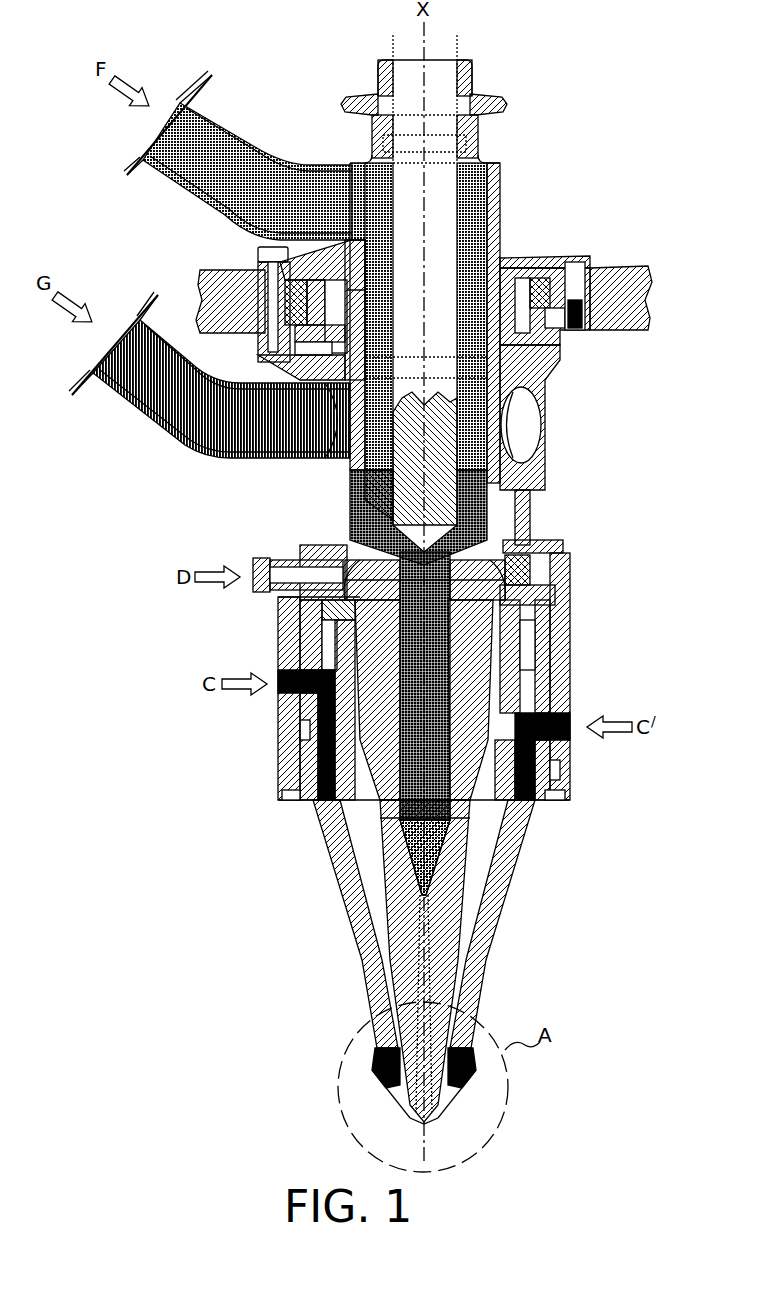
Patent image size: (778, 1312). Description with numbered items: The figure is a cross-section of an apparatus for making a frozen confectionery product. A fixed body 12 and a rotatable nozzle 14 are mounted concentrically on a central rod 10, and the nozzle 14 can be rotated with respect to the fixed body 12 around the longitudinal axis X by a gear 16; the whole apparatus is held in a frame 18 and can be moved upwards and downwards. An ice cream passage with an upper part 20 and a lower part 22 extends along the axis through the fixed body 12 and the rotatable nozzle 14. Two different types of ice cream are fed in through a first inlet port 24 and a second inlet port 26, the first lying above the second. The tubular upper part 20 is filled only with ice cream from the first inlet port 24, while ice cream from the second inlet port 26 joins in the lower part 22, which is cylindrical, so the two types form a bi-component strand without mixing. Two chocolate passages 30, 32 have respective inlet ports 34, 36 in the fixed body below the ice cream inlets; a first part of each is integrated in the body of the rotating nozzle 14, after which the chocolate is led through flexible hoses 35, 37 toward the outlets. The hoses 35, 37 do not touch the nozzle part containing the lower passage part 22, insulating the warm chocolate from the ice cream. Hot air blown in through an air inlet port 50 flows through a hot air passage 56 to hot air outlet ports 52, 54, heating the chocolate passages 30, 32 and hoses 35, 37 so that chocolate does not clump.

The central rod 10 is at (455, 38).
The fixed body 12 is at (533, 258).
The rotatable nozzle 14 is at (528, 528).
The gear 16 is at (580, 262).
The frame 18 is at (632, 330).
The upper part of ice cream passage 20 is at (382, 262).
The lower part of ice cream passage 22 is at (405, 798).
The first inlet port 24 is at (183, 110).
The second inlet port 26 is at (133, 333).
The chocolate passage 30 is at (280, 778).
The chocolate passage 32 is at (565, 755).
The chocolate inlet port 34 is at (572, 718).
The flexible hose 35 is at (350, 898).
The chocolate inlet port 36 is at (272, 676).
The flexible hose 37 is at (500, 898).
The air inlet port 50 is at (252, 562).
The hot air outlet port 52 is at (300, 742).
The hot air outlet port 54 is at (532, 803).
The hot air passage 56 is at (282, 630).